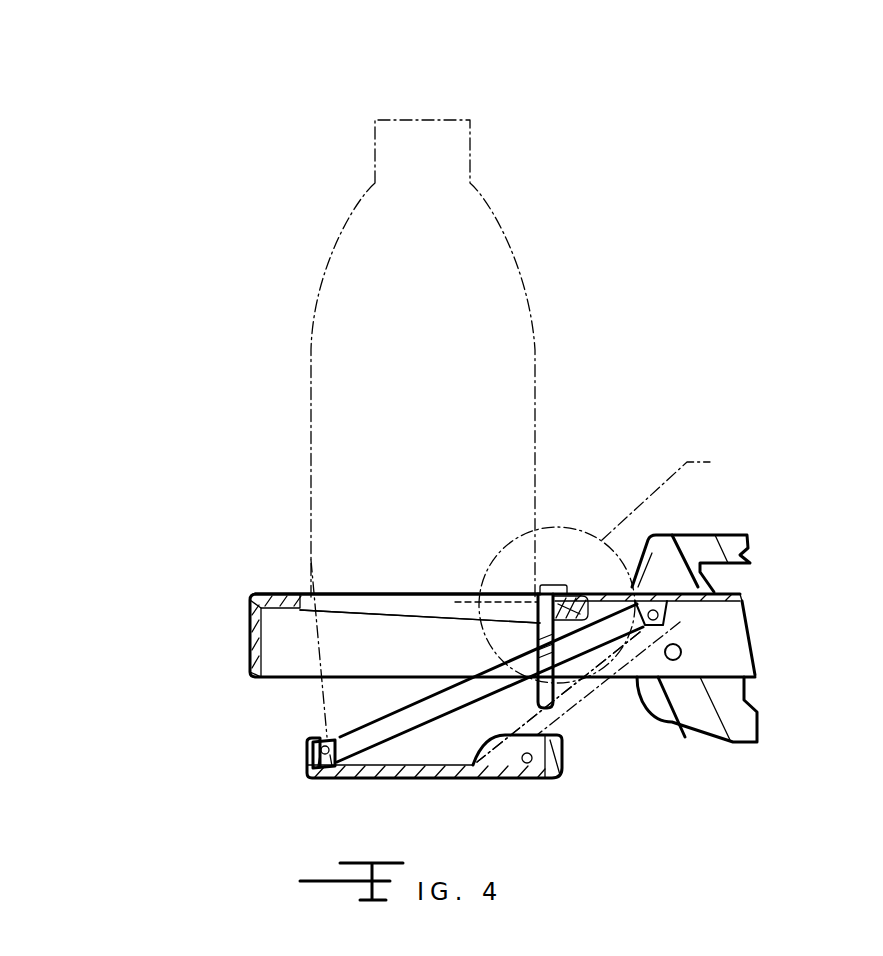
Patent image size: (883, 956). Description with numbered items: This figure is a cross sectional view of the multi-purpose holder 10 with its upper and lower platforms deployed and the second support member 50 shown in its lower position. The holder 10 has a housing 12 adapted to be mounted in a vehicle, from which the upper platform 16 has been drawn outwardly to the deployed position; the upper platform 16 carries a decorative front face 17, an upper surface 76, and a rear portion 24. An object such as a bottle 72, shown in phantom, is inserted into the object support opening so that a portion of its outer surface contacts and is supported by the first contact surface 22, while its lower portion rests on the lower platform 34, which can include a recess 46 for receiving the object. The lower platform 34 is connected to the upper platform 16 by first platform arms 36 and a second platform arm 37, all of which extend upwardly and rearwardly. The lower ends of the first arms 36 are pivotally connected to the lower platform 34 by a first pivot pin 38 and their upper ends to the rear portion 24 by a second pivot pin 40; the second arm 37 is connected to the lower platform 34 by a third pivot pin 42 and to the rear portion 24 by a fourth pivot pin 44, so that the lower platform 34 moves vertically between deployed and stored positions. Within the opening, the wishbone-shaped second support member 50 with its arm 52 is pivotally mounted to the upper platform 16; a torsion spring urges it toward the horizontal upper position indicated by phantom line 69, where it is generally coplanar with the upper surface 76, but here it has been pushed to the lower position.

The multi-purpose holder 10 is at (230, 563).
The housing 12 is at (748, 752).
The upper platform 16 is at (246, 597).
The front face 17 is at (250, 637).
The first contact surface 22 is at (333, 596).
The rear portion 24 is at (608, 593).
The lower platform 34 is at (565, 785).
The first platform arms 36 is at (597, 710).
The second platform arm 37 is at (372, 728).
The first pivot pin 38 is at (508, 762).
The second pivot pin 40 is at (681, 659).
The third pivot pin 42 is at (314, 767).
The fourth pivot pin 44 is at (668, 620).
The recesses 46 is at (522, 760).
The second support member 50 is at (528, 634).
The arm 52 is at (540, 694).
The phantom line 69 is at (500, 596).
The bottle 72 is at (503, 223).
The upper surface 76 is at (428, 595).